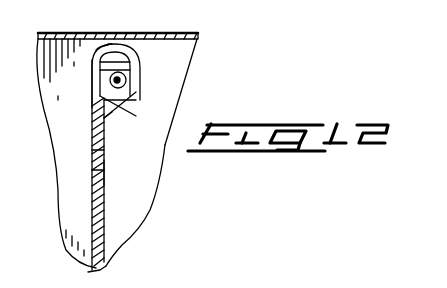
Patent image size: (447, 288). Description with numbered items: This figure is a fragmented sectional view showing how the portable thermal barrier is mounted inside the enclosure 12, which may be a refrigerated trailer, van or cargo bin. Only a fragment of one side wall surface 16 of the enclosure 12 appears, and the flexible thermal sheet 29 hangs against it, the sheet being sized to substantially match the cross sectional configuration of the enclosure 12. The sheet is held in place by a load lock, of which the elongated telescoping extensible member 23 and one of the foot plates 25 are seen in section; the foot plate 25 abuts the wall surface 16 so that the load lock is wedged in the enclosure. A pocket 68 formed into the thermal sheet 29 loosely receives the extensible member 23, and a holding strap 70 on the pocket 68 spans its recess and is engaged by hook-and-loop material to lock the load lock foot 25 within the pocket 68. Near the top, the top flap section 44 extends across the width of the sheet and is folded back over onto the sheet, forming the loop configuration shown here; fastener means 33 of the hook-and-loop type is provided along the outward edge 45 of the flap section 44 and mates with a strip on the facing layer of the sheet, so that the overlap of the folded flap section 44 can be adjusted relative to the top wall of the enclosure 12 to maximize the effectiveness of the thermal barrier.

The enclosure 12 is at (196, 72).
The side wall surface 16 is at (167, 156).
The extensible member 23 is at (126, 78).
The foot plate 25 is at (134, 52).
The flexible thermal sheet 29 is at (103, 233).
The fastener means 33 is at (106, 158).
The top flap section 44 is at (136, 98).
The outward edge 45 is at (102, 170).
The pocket 68 is at (129, 122).
The holding strap 70 is at (112, 42).